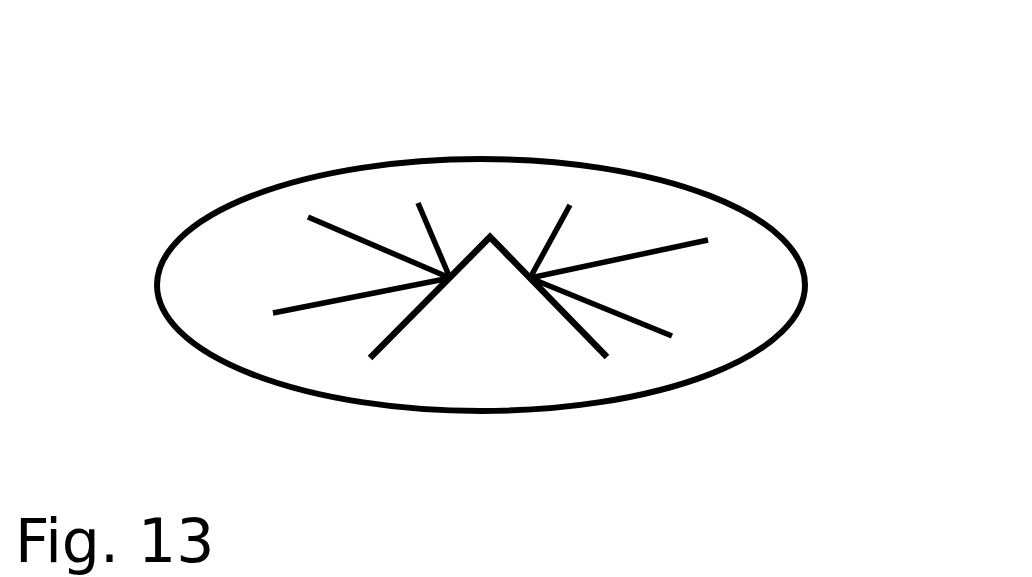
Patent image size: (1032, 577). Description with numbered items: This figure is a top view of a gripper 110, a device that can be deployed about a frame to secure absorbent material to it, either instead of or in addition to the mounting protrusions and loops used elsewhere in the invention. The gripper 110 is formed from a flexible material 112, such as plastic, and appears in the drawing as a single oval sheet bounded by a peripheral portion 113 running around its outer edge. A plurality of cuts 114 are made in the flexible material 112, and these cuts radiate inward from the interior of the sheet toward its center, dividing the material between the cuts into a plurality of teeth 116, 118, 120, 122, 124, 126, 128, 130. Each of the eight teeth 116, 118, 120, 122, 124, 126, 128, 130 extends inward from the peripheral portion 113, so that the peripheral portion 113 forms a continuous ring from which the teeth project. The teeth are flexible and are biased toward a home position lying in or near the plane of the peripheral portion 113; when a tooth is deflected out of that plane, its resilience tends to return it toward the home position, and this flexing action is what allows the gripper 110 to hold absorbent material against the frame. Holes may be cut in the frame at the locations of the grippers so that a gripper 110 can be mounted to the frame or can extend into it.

The gripper 110 is at (152, 135).
The flexible material 112 is at (750, 248).
The peripheral portion 113 is at (773, 268).
The cuts 114 is at (448, 237).
The tooth 116 is at (513, 233).
The tooth 118 is at (622, 218).
The tooth 120 is at (657, 283).
The tooth 122 is at (620, 335).
The tooth 124 is at (530, 322).
The tooth 126 is at (375, 313).
The tooth 128 is at (358, 260).
The tooth 130 is at (412, 238).